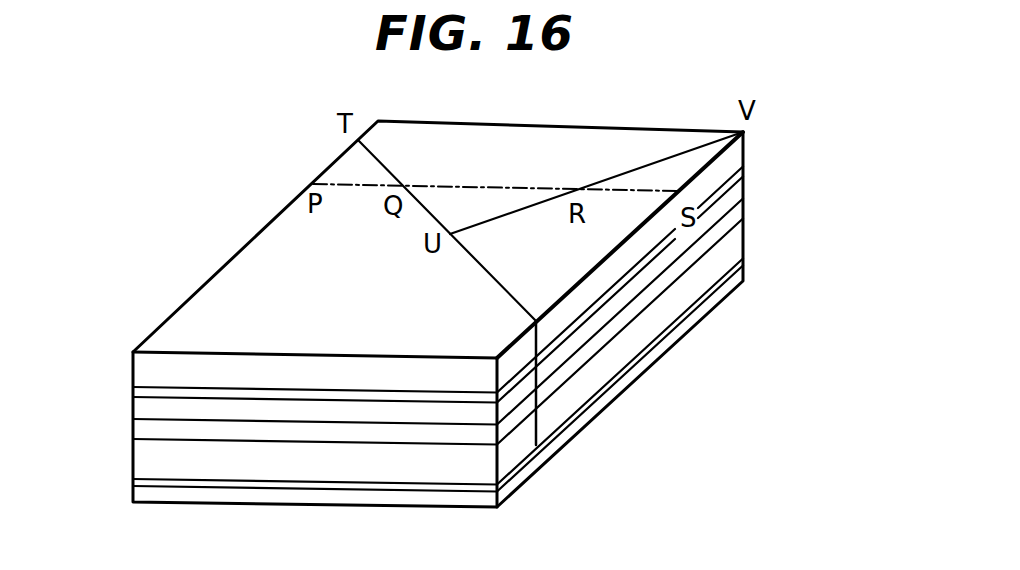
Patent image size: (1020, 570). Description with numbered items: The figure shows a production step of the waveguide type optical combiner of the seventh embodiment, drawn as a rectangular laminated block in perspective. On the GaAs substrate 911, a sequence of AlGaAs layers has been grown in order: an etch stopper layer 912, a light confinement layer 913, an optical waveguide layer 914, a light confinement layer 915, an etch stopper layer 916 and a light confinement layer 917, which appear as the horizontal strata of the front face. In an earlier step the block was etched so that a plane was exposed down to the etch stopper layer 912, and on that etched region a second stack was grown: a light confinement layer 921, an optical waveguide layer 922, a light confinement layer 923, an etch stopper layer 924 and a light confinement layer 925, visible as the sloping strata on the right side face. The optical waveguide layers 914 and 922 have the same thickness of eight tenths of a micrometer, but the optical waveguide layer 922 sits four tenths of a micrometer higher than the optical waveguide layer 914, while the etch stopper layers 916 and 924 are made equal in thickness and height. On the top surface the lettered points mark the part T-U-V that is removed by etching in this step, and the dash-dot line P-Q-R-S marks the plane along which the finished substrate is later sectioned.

The GaAs substrate 911 is at (132, 494).
The etch stopper layer 912 is at (135, 482).
The light confinement layer 913 is at (135, 455).
The optical waveguide layer 914 is at (135, 428).
The light confinement layer 915 is at (135, 409).
The etch stopper layer 916 is at (135, 391).
The light confinement layer 917 is at (133, 362).
The light confinement layer 921 is at (737, 246).
The optical waveguide layer 922 is at (737, 206).
The light confinement layer 923 is at (737, 186).
The etch stopper layer 924 is at (737, 173).
The light confinement layer 925 is at (737, 152).